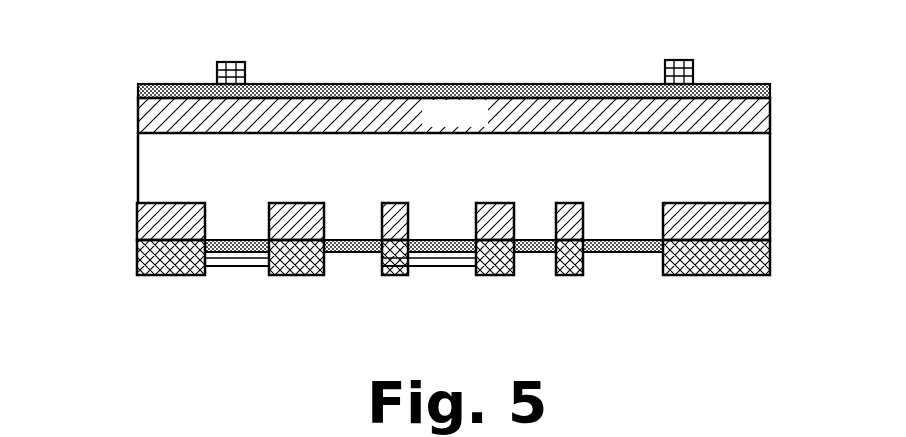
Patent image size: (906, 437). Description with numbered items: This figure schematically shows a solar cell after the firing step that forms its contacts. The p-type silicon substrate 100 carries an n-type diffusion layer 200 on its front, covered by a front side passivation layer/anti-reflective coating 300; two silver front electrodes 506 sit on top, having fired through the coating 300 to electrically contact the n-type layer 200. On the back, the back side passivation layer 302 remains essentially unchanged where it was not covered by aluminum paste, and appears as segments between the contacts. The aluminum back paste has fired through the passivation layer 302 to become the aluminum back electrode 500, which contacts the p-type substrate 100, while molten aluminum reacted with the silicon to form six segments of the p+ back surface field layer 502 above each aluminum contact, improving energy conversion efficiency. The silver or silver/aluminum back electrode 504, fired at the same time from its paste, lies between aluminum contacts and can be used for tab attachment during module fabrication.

The p-type silicon substrate 100 is at (454, 168).
The n-type diffusion layer 200 is at (454, 115).
The front side passivation layer/anti-reflective coating 300 is at (138, 86).
The back side passivation layer 302 is at (345, 245).
The aluminum back electrode 500 is at (167, 265).
The p+ layer (back surface field, BSF) 502 is at (167, 222).
The silver or silver/aluminum back electrode 504 is at (237, 262).
The silver front electrode 506 is at (217, 62).